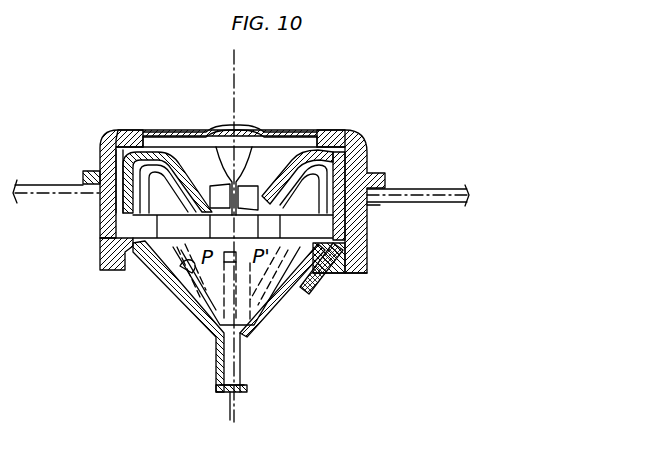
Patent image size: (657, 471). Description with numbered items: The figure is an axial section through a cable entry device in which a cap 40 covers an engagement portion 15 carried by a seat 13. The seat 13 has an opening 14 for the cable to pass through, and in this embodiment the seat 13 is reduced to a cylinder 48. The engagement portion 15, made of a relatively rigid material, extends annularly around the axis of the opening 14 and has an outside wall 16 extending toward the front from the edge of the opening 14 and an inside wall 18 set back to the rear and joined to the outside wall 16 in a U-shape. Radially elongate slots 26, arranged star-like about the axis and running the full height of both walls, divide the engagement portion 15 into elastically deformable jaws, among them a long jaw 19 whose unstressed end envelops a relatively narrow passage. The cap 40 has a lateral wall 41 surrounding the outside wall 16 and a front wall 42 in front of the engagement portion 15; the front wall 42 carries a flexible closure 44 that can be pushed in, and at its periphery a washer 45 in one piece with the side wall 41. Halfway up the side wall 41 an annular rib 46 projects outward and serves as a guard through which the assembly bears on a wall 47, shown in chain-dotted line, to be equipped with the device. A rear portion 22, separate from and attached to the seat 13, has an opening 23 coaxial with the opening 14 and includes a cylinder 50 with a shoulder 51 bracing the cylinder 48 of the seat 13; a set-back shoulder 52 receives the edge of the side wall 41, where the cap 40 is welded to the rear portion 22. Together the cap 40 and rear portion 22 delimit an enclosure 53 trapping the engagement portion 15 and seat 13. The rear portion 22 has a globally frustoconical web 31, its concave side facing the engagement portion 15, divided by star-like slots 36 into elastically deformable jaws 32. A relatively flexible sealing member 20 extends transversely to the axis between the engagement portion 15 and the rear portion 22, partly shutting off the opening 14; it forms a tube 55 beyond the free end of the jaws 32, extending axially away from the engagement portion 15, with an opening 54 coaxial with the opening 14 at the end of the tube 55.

The seat 13 is at (353, 230).
The opening 14 is at (289, 300).
The engagement portion 15 is at (142, 142).
The outside wall 16 is at (117, 201).
The inside wall 18 is at (236, 178).
The long jaw 19 is at (166, 152).
The sealing member 20 is at (186, 270).
The rear portion 22 is at (168, 293).
The opening 23 is at (211, 335).
The radially elongate slots 26 is at (214, 198).
The web 31 is at (155, 282).
The jaws 32 is at (178, 308).
The radially elongate slots 36 is at (253, 337).
The cap 40 is at (374, 151).
The lateral wall 41 is at (367, 211).
The front wall 42 is at (352, 132).
The closure 44 is at (275, 170).
The washer 45 is at (345, 136).
The annular rib 46 is at (82, 172).
The wall 47 is at (405, 186).
The cylinder 48 is at (100, 243).
The cylinder 50 is at (363, 280).
The shoulder 51 is at (322, 266).
The shoulder 52 is at (367, 252).
The enclosure 53 is at (118, 150).
The opening 54 is at (240, 403).
The tube 55 is at (204, 388).